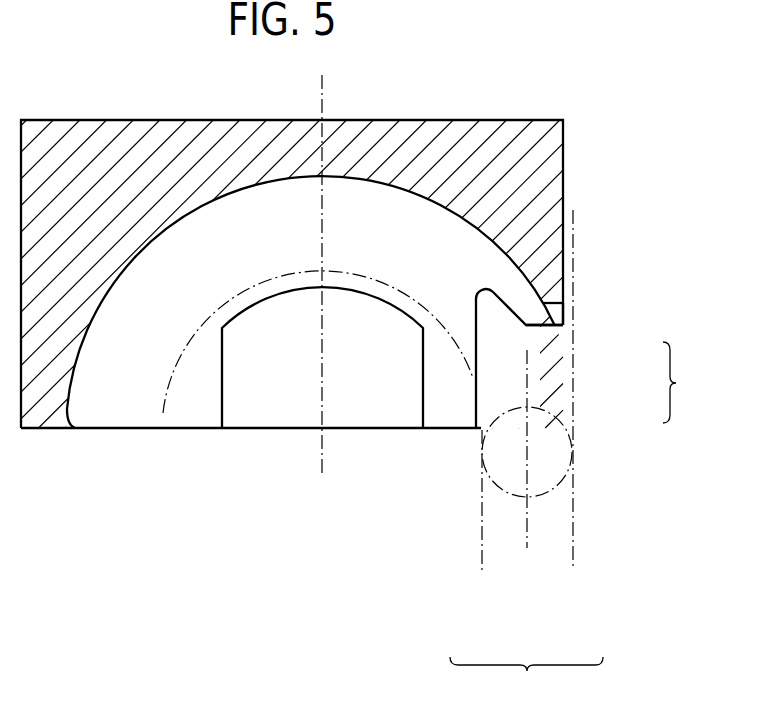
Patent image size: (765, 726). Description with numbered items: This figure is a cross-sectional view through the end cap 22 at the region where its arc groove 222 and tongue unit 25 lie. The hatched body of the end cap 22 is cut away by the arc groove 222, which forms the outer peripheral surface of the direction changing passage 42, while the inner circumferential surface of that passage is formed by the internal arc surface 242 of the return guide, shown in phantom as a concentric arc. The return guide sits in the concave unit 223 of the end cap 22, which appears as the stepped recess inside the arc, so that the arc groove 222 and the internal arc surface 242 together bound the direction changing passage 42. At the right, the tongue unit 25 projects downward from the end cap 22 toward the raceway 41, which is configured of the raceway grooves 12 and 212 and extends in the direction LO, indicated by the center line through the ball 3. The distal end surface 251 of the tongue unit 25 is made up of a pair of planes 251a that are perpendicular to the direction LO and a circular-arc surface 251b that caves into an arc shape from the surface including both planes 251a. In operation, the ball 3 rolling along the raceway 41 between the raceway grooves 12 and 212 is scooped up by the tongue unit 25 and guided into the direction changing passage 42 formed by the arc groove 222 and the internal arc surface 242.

The end cap 22 is at (529, 117).
The arc groove 222 is at (74, 430).
The direction changing passage 42 is at (115, 410).
The internal arc surface 242 is at (163, 415).
The concave unit 223 is at (422, 413).
The tongue unit 25 is at (517, 306).
The plane 251a is at (540, 328).
The circular-arc surface 251b is at (553, 304).
The distal end surface 251 is at (641, 363).
The ball 3 is at (540, 496).
The raceway groove 212 is at (482, 543).
The direction in which the raceway extends LO is at (527, 505).
The raceway groove 12 is at (573, 543).
The raceway 41 is at (526, 681).